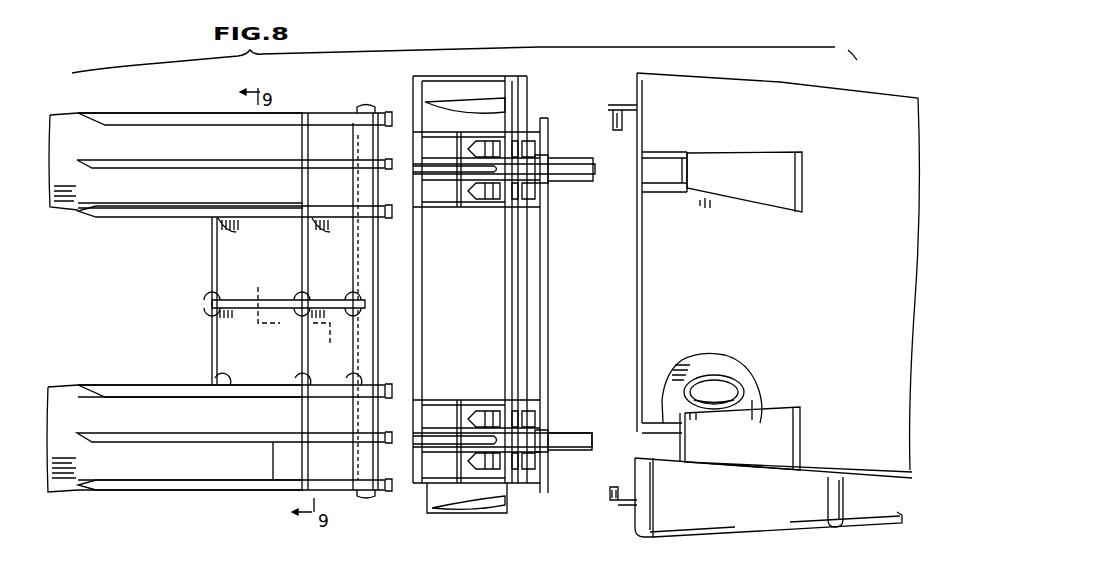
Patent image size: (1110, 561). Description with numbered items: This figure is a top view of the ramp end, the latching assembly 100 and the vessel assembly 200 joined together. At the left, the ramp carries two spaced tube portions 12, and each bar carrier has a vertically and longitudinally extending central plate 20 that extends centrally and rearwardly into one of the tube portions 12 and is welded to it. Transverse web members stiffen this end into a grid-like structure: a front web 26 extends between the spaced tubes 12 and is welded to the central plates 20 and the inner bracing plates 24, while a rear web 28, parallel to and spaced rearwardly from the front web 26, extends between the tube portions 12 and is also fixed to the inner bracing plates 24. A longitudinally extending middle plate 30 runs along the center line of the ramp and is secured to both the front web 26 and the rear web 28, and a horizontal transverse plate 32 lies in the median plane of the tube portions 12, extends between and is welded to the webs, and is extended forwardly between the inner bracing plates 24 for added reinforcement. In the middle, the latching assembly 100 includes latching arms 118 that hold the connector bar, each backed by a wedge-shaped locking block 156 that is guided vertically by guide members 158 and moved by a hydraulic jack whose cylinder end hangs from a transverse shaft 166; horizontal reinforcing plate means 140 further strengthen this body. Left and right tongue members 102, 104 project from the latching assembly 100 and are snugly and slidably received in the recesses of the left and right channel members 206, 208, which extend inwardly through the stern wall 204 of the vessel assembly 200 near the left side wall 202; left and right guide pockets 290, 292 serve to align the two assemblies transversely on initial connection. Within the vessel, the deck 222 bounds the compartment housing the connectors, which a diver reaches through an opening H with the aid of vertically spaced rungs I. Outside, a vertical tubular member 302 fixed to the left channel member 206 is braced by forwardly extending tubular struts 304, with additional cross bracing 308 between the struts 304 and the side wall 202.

The tube portion 12 is at (166, 130).
The central plate 20 is at (318, 166).
The inner bracing plate 24 is at (342, 123).
The front web 26 is at (302, 362).
The rear web 28 is at (212, 333).
The middle plate 30 is at (350, 298).
The horizontal transverse plate 32 is at (238, 250).
The reinforcing plate means 140 is at (386, 295).
The latching assembly 100 is at (464, 77).
The latching arm 118 is at (490, 135).
The transversely extending shaft 166 is at (523, 150).
The locking block 156 is at (545, 146).
The guide member 158 is at (540, 134).
The right tongue member 104 is at (570, 184).
The left tongue member 102 is at (571, 444).
The vessel assembly 200 is at (828, 93).
The left side wall 202 is at (866, 475).
The stern wall 204 is at (637, 261).
The left channel member 206 is at (654, 411).
The right channel member 208 is at (686, 149).
The deck 222 is at (763, 261).
The left guide pocket 290 is at (610, 497).
The right guide pocket 292 is at (612, 103).
The vertical tubular member 302 is at (650, 502).
The tubular strut 304 is at (758, 525).
The cross bracing 308 is at (829, 496).
The opening H is at (744, 379).
The rungs I is at (732, 397).